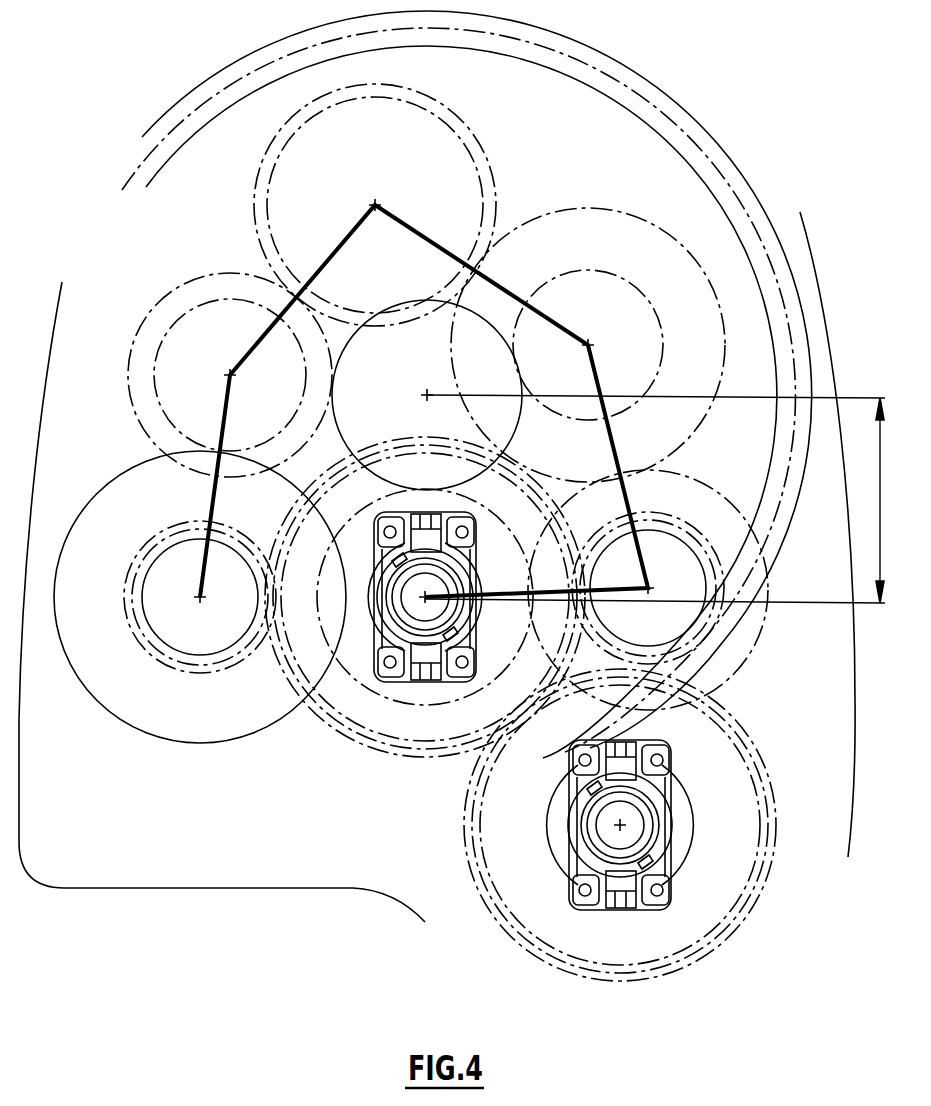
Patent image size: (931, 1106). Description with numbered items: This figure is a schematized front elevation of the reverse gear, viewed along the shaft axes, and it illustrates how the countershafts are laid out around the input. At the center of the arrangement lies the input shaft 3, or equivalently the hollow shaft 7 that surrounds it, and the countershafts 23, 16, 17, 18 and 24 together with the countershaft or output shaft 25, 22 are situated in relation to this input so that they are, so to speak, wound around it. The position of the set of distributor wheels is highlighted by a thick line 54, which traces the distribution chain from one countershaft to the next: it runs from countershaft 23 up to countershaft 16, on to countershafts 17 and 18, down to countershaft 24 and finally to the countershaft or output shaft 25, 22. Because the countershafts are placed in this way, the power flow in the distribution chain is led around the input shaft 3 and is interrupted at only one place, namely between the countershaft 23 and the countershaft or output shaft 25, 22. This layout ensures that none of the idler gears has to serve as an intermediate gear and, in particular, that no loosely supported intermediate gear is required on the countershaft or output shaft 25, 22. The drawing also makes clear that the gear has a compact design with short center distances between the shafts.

The input shaft 3 is at (427, 395).
The hollow shaft 7 is at (427, 395).
The countershaft 16 is at (230, 375).
The countershaft 17 is at (375, 205).
The countershaft 18 is at (588, 345).
The output shaft 22 is at (425, 597).
The countershaft 23 is at (200, 597).
The countershaft 24 is at (648, 588).
The countershaft 25 is at (419, 606).
The thick line 54 is at (416, 222).